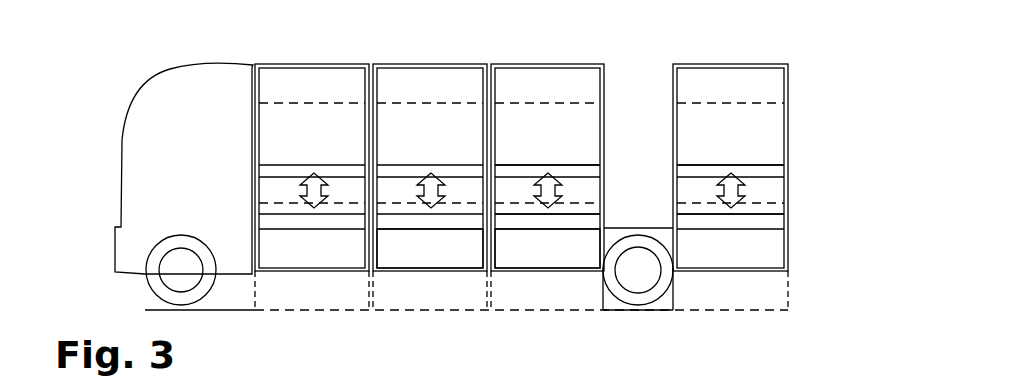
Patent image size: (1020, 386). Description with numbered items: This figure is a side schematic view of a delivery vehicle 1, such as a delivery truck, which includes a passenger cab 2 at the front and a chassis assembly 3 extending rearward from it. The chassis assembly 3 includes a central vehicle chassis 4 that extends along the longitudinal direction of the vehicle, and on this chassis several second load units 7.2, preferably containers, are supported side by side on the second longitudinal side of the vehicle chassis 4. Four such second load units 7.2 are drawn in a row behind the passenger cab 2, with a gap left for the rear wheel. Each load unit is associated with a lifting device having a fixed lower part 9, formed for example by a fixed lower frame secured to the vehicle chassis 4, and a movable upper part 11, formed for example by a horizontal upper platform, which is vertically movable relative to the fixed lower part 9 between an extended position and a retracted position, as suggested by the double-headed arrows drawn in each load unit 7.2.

The delivery vehicle 1 is at (142, 72).
The passenger cab 2 is at (192, 95).
The second load unit 7.2 is at (461, 95).
The movable upper part 11 is at (566, 168).
The fixed lower part 9 is at (584, 222).
The chassis assembly 3 is at (433, 252).
The vehicle chassis 4 is at (540, 252).